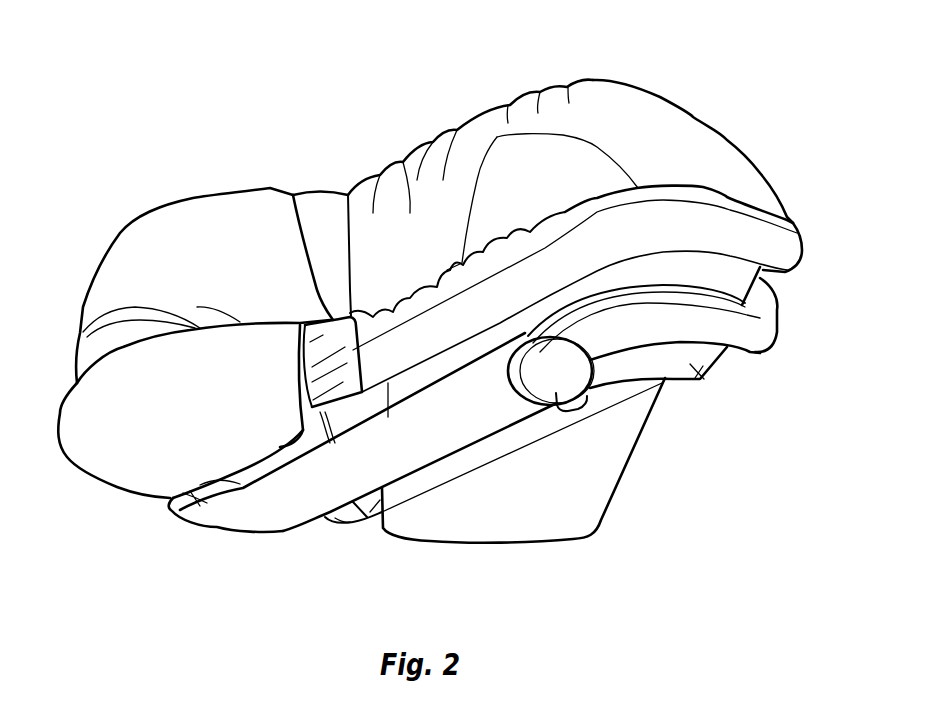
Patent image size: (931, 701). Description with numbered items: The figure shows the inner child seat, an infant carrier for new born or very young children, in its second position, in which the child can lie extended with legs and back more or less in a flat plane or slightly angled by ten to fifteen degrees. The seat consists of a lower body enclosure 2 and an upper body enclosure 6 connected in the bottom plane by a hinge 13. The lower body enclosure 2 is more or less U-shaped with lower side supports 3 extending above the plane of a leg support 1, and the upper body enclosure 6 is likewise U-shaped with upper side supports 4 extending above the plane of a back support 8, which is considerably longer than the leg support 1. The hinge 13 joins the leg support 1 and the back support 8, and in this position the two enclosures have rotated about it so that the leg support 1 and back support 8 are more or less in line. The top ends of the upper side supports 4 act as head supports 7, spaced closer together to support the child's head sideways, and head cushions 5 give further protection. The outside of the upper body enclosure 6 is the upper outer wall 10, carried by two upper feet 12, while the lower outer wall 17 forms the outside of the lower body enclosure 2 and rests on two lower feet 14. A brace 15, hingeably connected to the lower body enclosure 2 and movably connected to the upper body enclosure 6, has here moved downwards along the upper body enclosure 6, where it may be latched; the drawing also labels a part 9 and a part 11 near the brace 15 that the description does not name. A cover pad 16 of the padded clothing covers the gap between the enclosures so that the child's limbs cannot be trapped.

The leg support 1 is at (78, 350).
The lower body enclosure 2 is at (109, 190).
The lower side supports 3 is at (195, 215).
The upper side supports 4 is at (395, 193).
The head cushions 5 is at (517, 160).
The upper body enclosure 6 is at (723, 60).
The head supports 7 is at (712, 143).
The back support 8 is at (763, 187).
The lower rim band 9 is at (740, 342).
The upper outer wall 10 is at (745, 303).
The handle pivot button 11 is at (580, 373).
The upper feet 12 is at (580, 503).
The hinge 13 is at (377, 510).
The lower feet 14 is at (335, 520).
The brace 15 is at (248, 515).
The cover pad 16 is at (320, 207).
The lower outer wall 17 is at (180, 512).